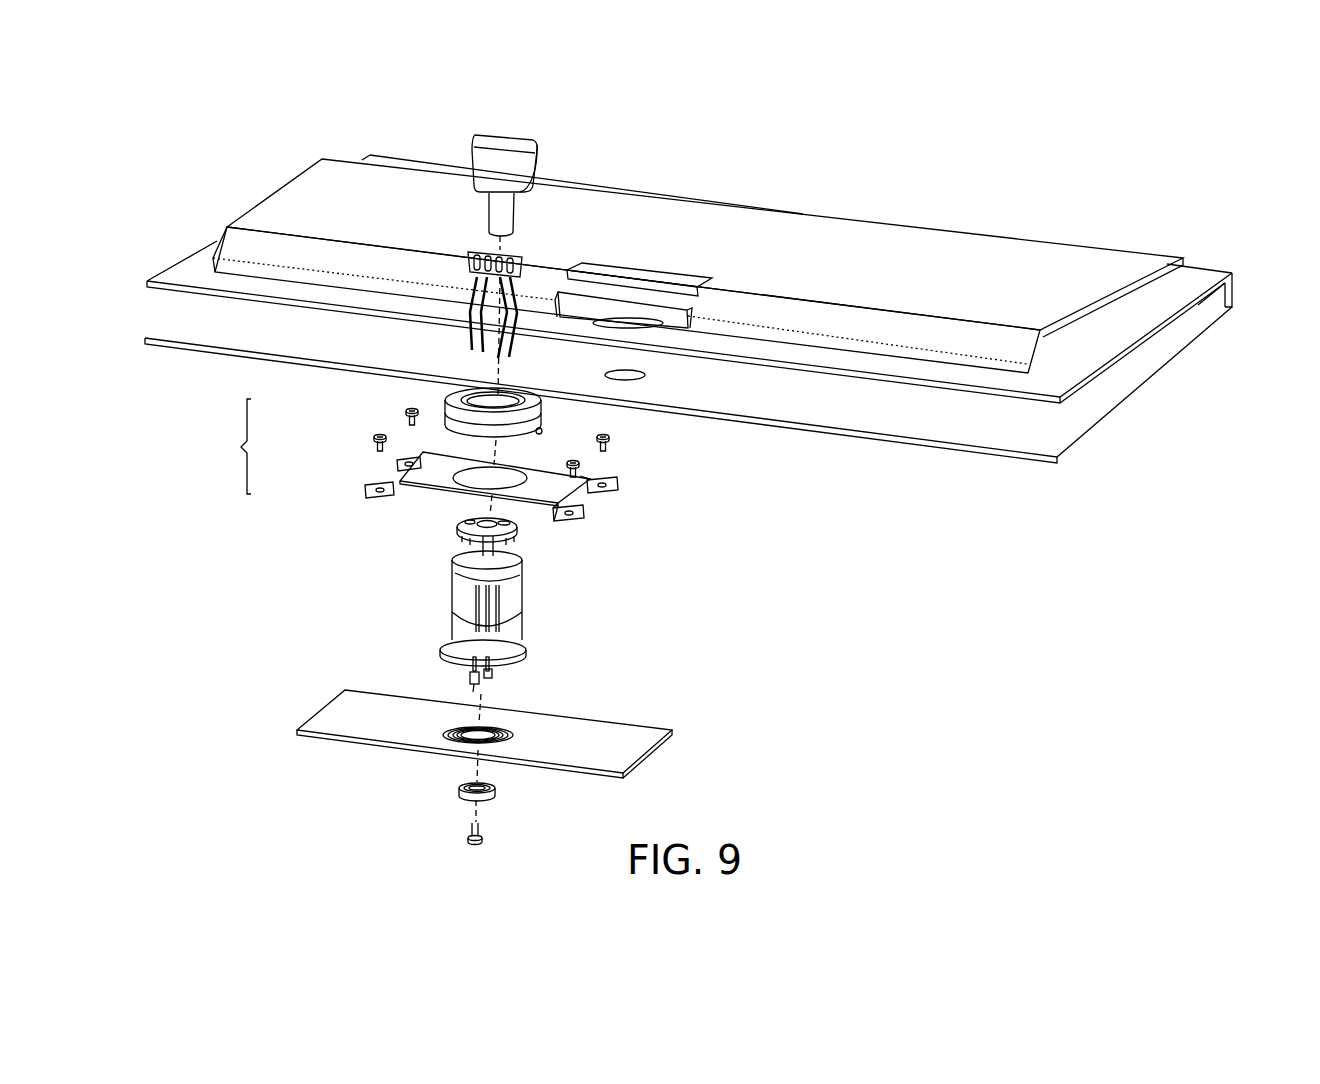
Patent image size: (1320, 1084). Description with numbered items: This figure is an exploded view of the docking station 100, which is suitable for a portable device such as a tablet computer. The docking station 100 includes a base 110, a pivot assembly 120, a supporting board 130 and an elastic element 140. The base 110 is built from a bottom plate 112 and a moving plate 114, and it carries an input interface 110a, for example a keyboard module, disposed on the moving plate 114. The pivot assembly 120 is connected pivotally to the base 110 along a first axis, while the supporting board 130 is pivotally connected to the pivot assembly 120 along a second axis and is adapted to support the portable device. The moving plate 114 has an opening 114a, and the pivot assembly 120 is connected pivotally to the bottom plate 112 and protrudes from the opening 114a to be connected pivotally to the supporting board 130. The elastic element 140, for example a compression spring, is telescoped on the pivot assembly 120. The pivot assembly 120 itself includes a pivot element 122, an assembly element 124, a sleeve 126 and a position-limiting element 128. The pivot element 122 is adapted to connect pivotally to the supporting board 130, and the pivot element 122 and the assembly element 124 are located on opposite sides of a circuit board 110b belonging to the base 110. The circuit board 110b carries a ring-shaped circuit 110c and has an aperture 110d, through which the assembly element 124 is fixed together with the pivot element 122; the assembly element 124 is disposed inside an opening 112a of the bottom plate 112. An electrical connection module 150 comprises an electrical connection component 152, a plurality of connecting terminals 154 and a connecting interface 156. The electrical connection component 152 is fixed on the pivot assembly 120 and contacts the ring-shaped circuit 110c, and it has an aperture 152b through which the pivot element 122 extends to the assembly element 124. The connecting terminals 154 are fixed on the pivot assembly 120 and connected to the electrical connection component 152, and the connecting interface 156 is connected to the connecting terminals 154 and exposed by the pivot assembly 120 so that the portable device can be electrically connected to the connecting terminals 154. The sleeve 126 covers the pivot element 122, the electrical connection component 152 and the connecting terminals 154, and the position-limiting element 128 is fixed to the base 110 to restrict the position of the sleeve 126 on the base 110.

The docking station 100 is at (1222, 208).
The base 110 is at (1240, 290).
The input interface 110a is at (1085, 328).
The circuit board 110b is at (637, 748).
The ring-shaped circuit 110c is at (520, 745).
The aperture 110d is at (477, 721).
The bottom plate 112 is at (1057, 430).
The opening 112a is at (629, 369).
The moving plate 114 is at (1045, 382).
The opening 114a is at (626, 318).
The pivot assembly 120 is at (557, 146).
The pivot element 122 is at (540, 177).
The assembly element 124 is at (495, 796).
The sleeve 126 is at (507, 638).
The position-limiting element 128 is at (558, 487).
The supporting board 130 is at (1057, 253).
The elastic element 140 is at (547, 420).
The electrical connection module 150 is at (227, 446).
The electrical connection component 152 is at (470, 522).
The aperture 152b is at (492, 519).
The connecting terminals 154 is at (468, 338).
The connecting interface 156 is at (470, 253).